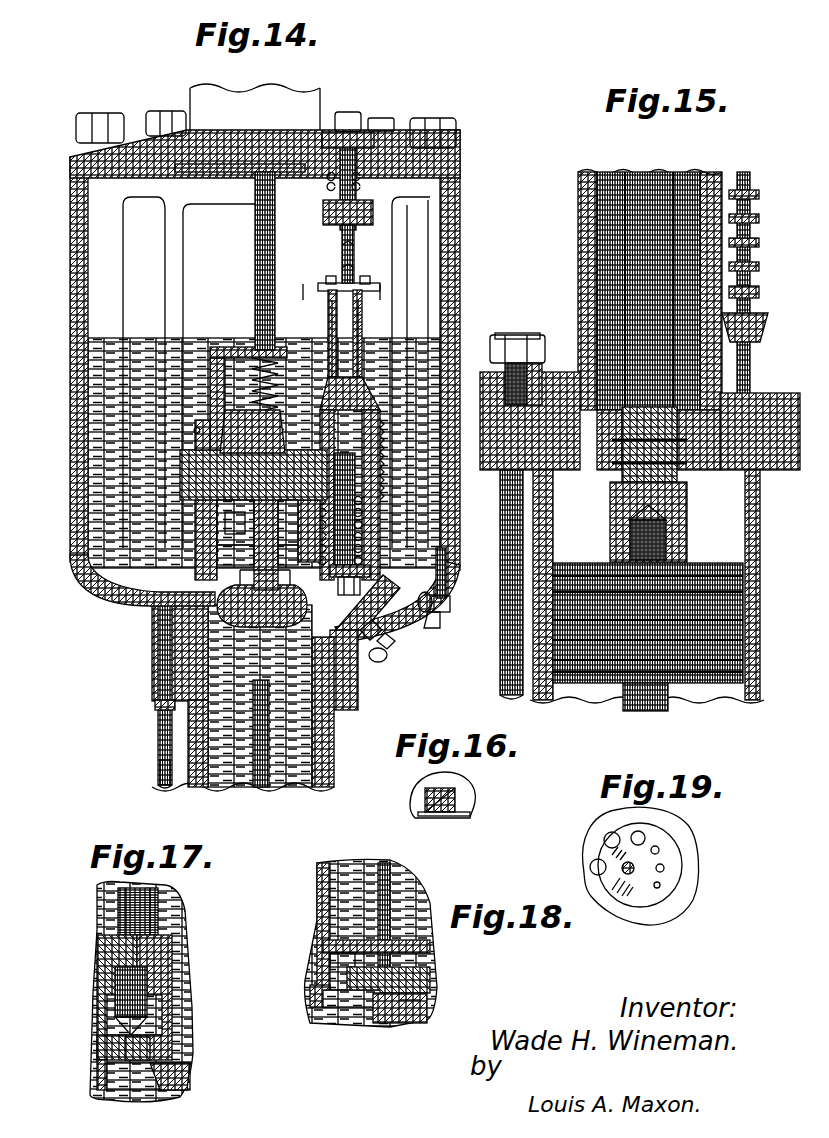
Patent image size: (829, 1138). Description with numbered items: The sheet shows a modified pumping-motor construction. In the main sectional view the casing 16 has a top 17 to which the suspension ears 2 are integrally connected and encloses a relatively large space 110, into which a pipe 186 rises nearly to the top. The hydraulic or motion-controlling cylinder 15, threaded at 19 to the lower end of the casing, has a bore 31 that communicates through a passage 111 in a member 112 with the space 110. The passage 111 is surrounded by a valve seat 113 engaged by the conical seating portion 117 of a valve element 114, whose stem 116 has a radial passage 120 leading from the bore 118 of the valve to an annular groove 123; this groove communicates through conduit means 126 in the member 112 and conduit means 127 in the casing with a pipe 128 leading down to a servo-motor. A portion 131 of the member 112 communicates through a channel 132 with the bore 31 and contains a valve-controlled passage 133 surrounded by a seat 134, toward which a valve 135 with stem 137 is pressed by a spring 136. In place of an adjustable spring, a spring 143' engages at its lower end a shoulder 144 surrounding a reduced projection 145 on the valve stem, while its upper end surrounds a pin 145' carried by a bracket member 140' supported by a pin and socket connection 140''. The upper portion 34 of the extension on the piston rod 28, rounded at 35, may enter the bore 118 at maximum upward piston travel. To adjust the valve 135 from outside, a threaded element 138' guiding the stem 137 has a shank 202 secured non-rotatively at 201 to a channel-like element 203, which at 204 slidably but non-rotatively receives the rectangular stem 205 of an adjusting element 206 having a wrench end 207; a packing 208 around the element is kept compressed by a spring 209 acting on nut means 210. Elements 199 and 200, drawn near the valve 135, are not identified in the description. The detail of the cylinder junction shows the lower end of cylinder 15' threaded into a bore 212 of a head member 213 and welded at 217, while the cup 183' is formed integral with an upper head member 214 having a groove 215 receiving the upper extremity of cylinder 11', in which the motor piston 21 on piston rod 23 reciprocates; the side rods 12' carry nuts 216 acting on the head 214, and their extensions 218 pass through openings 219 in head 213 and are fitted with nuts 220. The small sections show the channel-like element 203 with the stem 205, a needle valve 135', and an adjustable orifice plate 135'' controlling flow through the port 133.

In FIG. 14, the ears 2 is at (275, 136).
In FIG. 14, the top of casing 17 is at (140, 157).
In FIG. 14, the space 110 is at (100, 235).
In FIG. 17, the space 110 is at (174, 911).
In FIG. 18, the space 110 is at (350, 873).
In FIG. 14, the pipe 186 is at (258, 250).
In FIG. 14, the upper end of adjusting element 207 is at (347, 112).
In FIG. 14, the adjusting element 206 is at (360, 143).
In FIG. 14, the packing 208 is at (372, 142).
In FIG. 14, the spring 209 is at (372, 188).
In FIG. 14, the nut means 210 is at (352, 242).
In FIG. 14, the stem 205 is at (366, 282).
In FIG. 16, the stem 205 is at (437, 816).
In FIG. 14, the casing structure 16 is at (459, 229).
In FIG. 17, the casing structure 16 is at (170, 1085).
In FIG. 18, the casing structure 16 is at (412, 1010).
In FIG. 14, the channel-like element 203 is at (362, 300).
In FIG. 16, the channel-like element 203 is at (456, 801).
In FIG. 14, the connection 204 is at (360, 290).
In FIG. 14, the spring 143' is at (184, 370).
In FIG. 14, the pin 145' is at (242, 349).
In FIG. 14, the bracket member 140' is at (239, 338).
In FIG. 14, the reduced projection 145 is at (268, 385).
In FIG. 14, the shank 202 is at (346, 422).
In FIG. 14, the non-rotative connection 201 is at (372, 425).
In FIG. 14, the shoulder 144 is at (222, 432).
In FIG. 14, the pin and socket connection 140'' is at (132, 415).
In FIG. 14, the valve stem 116 is at (200, 522).
In FIG. 14, the conduit means 126 is at (217, 547).
In FIG. 14, the member 112 is at (202, 566).
In FIG. 17, the member 112 is at (107, 1016).
In FIG. 18, the member 112 is at (324, 948).
In FIG. 14, the annular internal groove 123 is at (165, 582).
In FIG. 14, the passage 120 is at (96, 579).
In FIG. 14, the passage 111 is at (142, 592).
In FIG. 17, the passage 111 is at (103, 1058).
In FIG. 18, the passage 111 is at (314, 982).
In FIG. 14, the valve seat 113 is at (232, 598).
In FIG. 14, the valve element 114 is at (222, 624).
In FIG. 14, the bore 118 is at (221, 631).
In FIG. 14, the conduit means 127 is at (178, 640).
In FIG. 14, the rounded portion 35 is at (196, 708).
In FIG. 14, the upper portion 34 is at (258, 730).
In FIG. 14, the pipe 128 is at (164, 762).
In FIG. 14, the motion-controlling cylinder 15 is at (255, 698).
In FIG. 14, the bore 31 is at (313, 766).
In FIG. 14, the conical seating portion 117 is at (346, 660).
In FIG. 17, the conical seating portion 117 is at (100, 1068).
In FIG. 18, the conical seating portion 117 is at (314, 1007).
In FIG. 14, the nozzle 199 is at (375, 628).
In FIG. 14, the channel 132 is at (402, 640).
In FIG. 17, the channel 132 is at (133, 1080).
In FIG. 18, the channel 132 is at (360, 1010).
In FIG. 14, the valve 135 is at (438, 630).
In FIG. 14, the fitting 200 is at (440, 612).
In FIG. 14, the portion of member 131 is at (446, 584).
In FIG. 14, the valve controlled passage 133 is at (417, 572).
In FIG. 17, the valve controlled passage 133 is at (137, 1056).
In FIG. 18, the valve controlled passage 133 is at (352, 985).
In FIG. 19, the valve controlled passage 133 is at (592, 867).
In FIG. 14, the valve seat 134 is at (380, 560).
In FIG. 14, the valve stem 137 is at (400, 540).
In FIG. 14, the spring 136 is at (383, 515).
In FIG. 15, the piston rod 28 is at (643, 172).
In FIG. 15, the hydraulic cylinder member 15' is at (656, 271).
In FIG. 15, the threaded element 138' is at (522, 384).
In FIG. 15, the nuts 220 is at (508, 342).
In FIG. 15, the nuts 216 is at (513, 380).
In FIG. 15, the extensions 218 is at (512, 343).
In FIG. 15, the openings 219 is at (540, 382).
In FIG. 15, the weld 217 is at (760, 318).
In FIG. 15, the bore 212 is at (714, 368).
In FIG. 15, the head member 213 is at (772, 394).
In FIG. 15, the upper head member 214 is at (758, 490).
In FIG. 15, the groove 215 is at (740, 515).
In FIG. 15, the cup 183' is at (701, 483).
In FIG. 15, the cylinder 11' is at (660, 586).
In FIG. 15, the motor piston 21 is at (718, 648).
In FIG. 15, the piston rod 23 is at (637, 707).
In FIG. 15, the side rods 12' is at (491, 584).
In FIG. 17, the needle valve 135' is at (174, 997).
In FIG. 18, the threaded connection 19 is at (338, 961).
In FIG. 18, the adjustable plate 135'' is at (427, 1007).
In FIG. 19, the adjustable plate 135'' is at (635, 881).